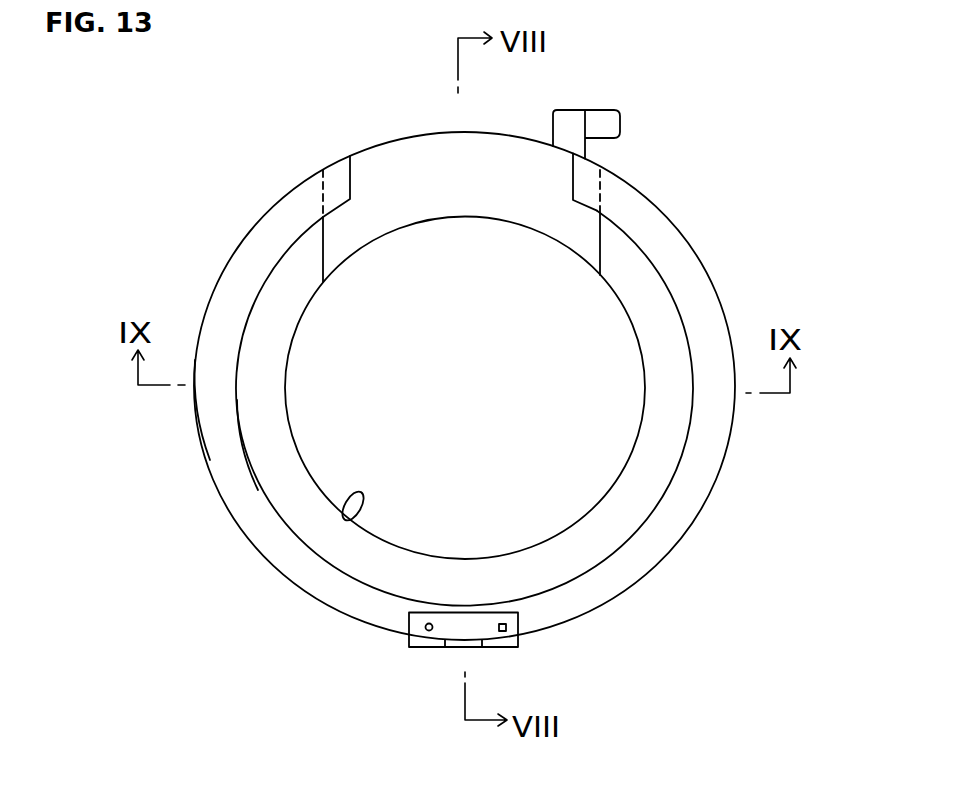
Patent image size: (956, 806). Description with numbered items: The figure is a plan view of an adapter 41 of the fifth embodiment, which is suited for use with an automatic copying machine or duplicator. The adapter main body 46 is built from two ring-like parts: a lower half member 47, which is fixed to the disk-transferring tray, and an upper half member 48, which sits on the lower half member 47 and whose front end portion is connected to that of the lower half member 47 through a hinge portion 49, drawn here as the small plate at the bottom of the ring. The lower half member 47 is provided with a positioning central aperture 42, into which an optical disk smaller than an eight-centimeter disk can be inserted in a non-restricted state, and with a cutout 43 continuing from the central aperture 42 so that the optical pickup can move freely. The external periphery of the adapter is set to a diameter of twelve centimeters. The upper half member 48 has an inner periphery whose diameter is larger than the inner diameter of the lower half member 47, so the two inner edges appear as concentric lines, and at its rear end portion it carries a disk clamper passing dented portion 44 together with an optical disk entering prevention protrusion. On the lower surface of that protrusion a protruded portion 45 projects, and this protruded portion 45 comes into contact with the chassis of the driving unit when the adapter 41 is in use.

The adapter 41 is at (688, 201).
The positioning central aperture 42 is at (352, 512).
The cutout 43 is at (365, 222).
The disk clamper passing dented portion 44 is at (398, 174).
The protruded portion 45 is at (603, 118).
The adapter main body 46 is at (184, 576).
The lower half member 47 is at (275, 463).
The upper half member 48 is at (222, 437).
The hinge portion 49 is at (451, 628).